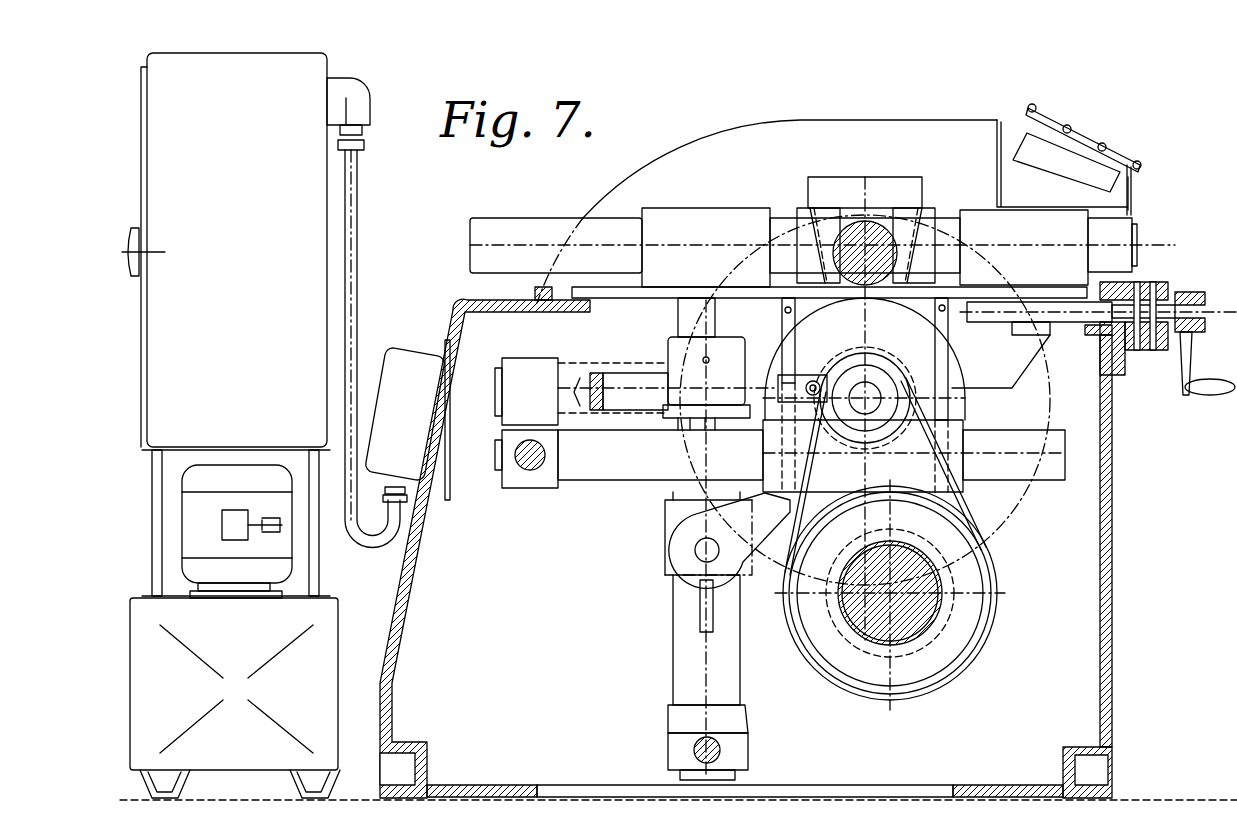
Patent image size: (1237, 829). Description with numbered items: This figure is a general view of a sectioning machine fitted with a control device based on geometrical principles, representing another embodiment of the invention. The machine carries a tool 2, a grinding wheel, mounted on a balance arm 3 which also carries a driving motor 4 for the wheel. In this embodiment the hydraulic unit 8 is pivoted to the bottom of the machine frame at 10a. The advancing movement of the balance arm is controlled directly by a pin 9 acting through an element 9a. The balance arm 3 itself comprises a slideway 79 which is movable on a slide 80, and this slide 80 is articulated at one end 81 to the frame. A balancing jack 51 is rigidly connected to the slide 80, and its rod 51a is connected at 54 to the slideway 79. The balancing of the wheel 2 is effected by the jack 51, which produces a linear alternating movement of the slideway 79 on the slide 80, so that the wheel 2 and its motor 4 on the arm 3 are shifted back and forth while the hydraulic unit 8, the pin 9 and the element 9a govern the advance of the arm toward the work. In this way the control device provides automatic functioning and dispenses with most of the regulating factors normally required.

The tool 2 is at (1005, 240).
The arm 3 is at (996, 596).
The driving motor 4 is at (932, 628).
The hydraulic unit 8 is at (664, 661).
The pin 9 is at (697, 553).
The element 9a is at (690, 518).
The pivot 10a is at (722, 750).
The balancing jack 51 is at (594, 373).
The rod 51a is at (748, 380).
The connection 54 is at (817, 380).
The slideway 79 is at (965, 410).
The slide 80 is at (1058, 392).
The articulation 81 is at (515, 464).